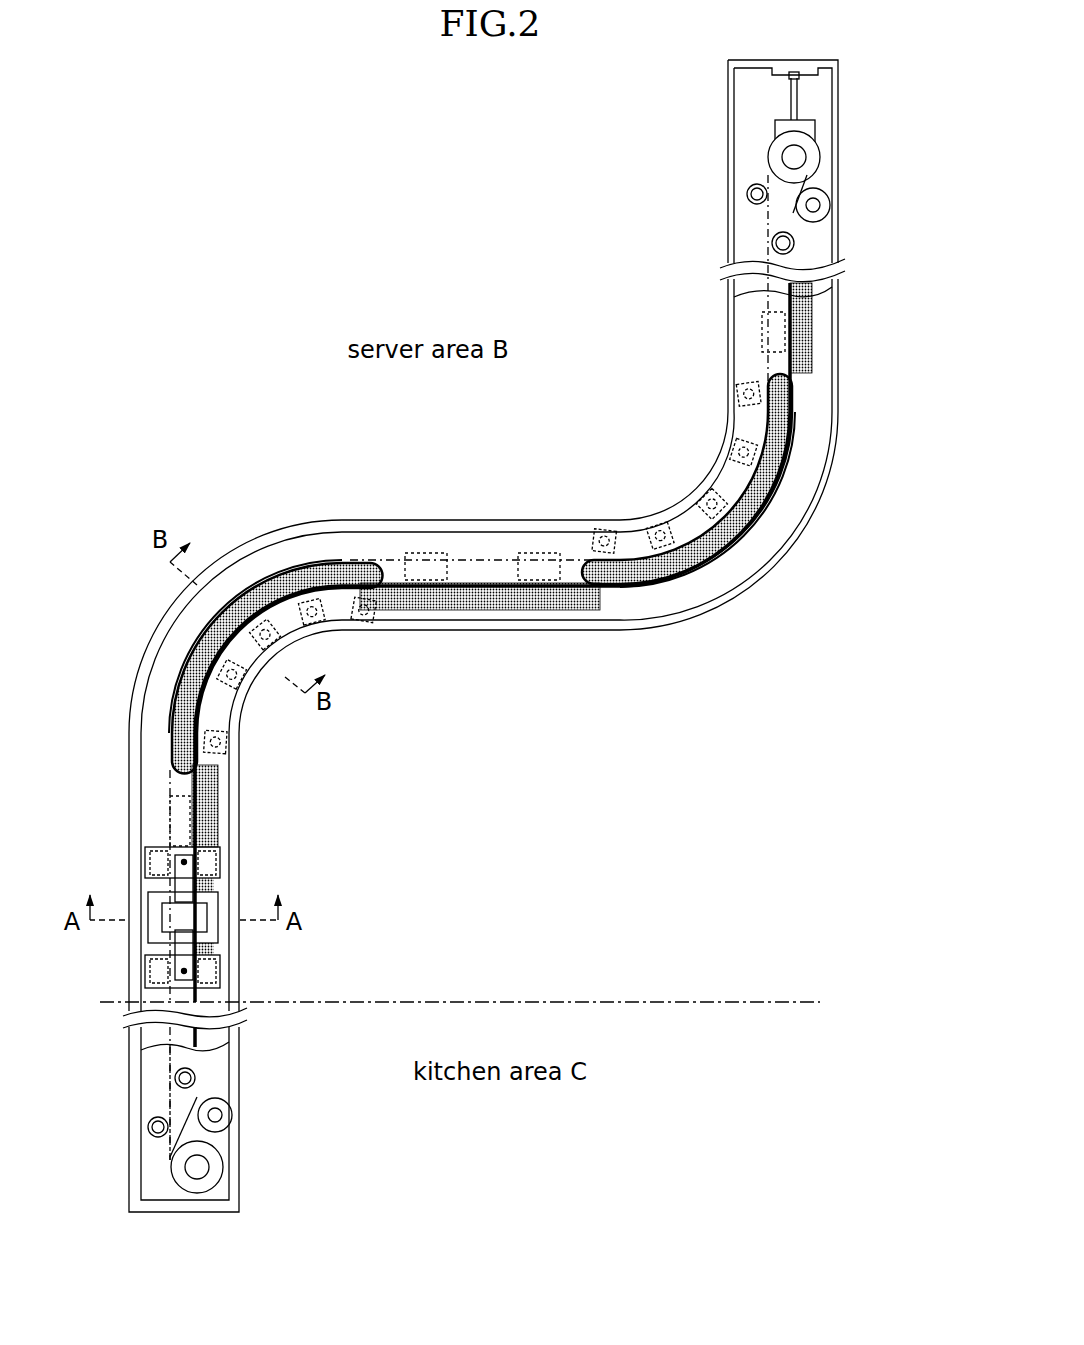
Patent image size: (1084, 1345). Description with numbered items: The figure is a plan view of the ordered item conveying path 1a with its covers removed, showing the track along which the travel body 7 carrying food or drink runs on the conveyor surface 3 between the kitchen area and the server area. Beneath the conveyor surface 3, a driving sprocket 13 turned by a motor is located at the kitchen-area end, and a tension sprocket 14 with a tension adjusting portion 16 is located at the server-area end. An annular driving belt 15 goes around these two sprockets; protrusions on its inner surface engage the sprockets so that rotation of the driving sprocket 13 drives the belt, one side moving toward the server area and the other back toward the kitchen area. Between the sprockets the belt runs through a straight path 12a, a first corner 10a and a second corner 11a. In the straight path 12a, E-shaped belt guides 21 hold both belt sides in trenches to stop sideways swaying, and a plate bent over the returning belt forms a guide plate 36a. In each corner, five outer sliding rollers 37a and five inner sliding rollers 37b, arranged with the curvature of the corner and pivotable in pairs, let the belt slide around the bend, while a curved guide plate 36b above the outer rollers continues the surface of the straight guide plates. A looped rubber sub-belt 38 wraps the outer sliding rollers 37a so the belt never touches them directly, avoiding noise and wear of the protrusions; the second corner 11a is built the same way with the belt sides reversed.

The ordered item conveying path 1a is at (184, 1217).
The conveyor surface 3 is at (655, 600).
The travel body 7 is at (230, 938).
The first corner 10a is at (238, 551).
The second corner 11a is at (747, 587).
The straight path 12a is at (843, 208).
The driving sprocket 13 is at (216, 1172).
The tension sprocket 14 is at (813, 165).
The driving belt 15 is at (167, 1097).
The tension adjusting portion 16 is at (798, 97).
The belt guide 21 is at (762, 340).
The guide plate 36a is at (450, 611).
The guide plate 36b is at (764, 521).
The sliding roller 37a is at (791, 478).
The sliding roller 37b is at (737, 400).
The sub-belt 38 is at (730, 490).